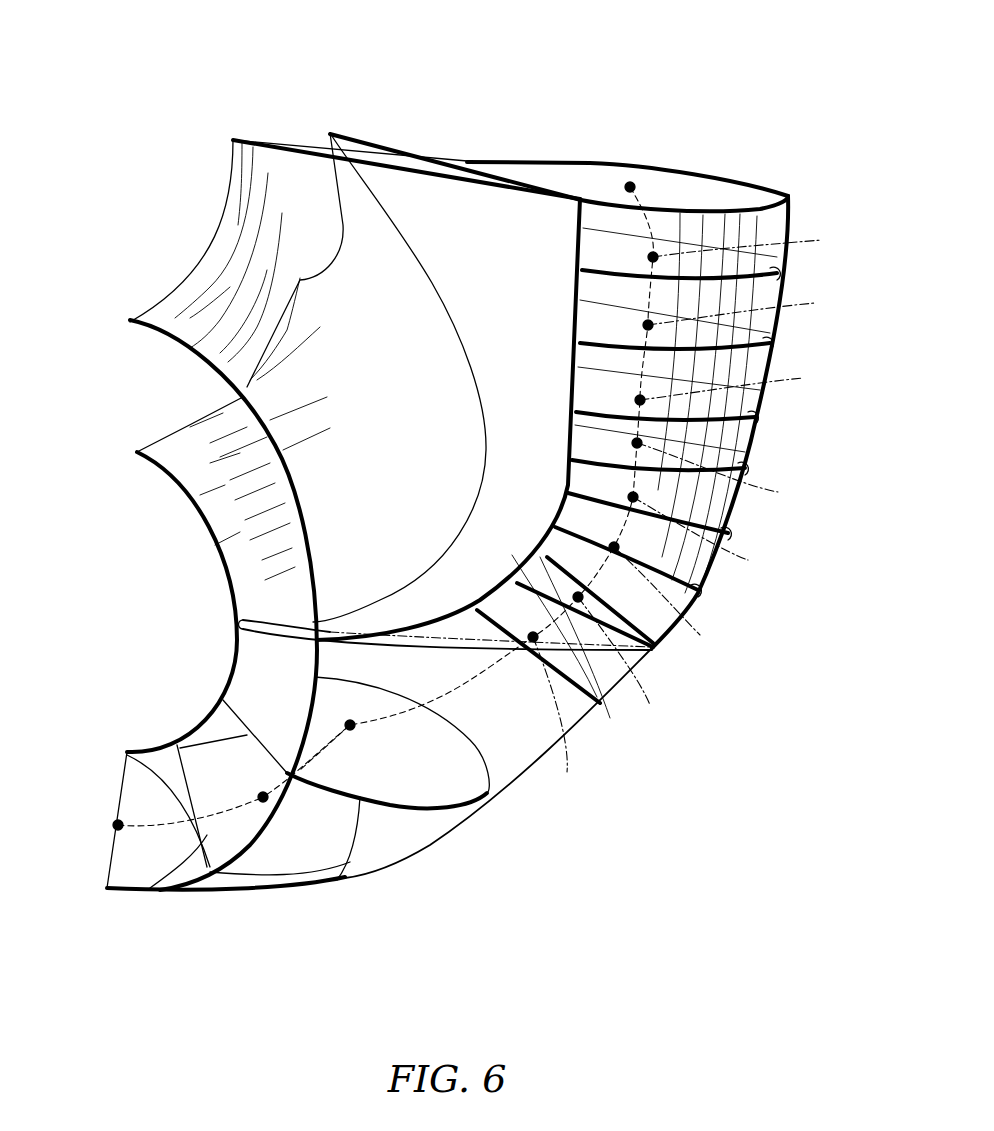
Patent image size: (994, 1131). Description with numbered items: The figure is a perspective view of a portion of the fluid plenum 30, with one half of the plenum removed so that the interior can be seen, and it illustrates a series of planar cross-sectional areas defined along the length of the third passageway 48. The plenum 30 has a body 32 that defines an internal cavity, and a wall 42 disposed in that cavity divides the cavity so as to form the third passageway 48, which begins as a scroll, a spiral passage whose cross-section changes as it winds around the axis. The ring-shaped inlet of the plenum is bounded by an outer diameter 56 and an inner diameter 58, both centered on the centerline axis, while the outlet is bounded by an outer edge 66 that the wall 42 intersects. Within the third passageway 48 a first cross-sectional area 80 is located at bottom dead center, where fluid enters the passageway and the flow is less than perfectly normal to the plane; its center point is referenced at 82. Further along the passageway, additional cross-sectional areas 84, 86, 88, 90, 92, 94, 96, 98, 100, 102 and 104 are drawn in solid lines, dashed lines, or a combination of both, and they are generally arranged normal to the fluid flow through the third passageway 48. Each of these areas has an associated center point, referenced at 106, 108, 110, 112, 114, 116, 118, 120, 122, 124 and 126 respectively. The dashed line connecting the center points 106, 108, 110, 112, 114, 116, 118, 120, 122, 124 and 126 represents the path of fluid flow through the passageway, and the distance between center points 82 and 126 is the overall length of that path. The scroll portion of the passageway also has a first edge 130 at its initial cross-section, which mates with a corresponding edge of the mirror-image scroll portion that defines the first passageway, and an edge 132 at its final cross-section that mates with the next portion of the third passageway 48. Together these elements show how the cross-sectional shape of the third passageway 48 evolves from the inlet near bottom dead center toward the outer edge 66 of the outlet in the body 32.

The fluid plenum 30 is at (180, 85).
The body 32 is at (208, 188).
The wall 42 is at (430, 150).
The third passageway 48 is at (250, 658).
The outer diameter 56 is at (160, 328).
The inner diameter 58 is at (178, 462).
The outer edge 66 is at (745, 182).
The cross-sectional area 80 is at (142, 777).
The center point 82 is at (118, 825).
The cross-sectional area 84 is at (200, 757).
The cross-sectional area 86 is at (257, 702).
The cross-sectional area 88 is at (598, 703).
The cross-sectional area 90 is at (650, 652).
The cross-sectional area 92 is at (700, 593).
The cross-sectional area 94 is at (725, 538).
The cross-sectional area 96 is at (740, 472).
The cross-sectional area 98 is at (750, 425).
The cross-sectional area 100 is at (760, 355).
The cross-sectional area 102 is at (762, 282).
The cross-sectional area 104 is at (698, 190).
The center point 106 is at (263, 797).
The center point 108 is at (350, 725).
The center point 110 is at (558, 719).
The center point 112 is at (623, 668).
The center point 114 is at (668, 605).
The center point 116 is at (706, 536).
The center point 118 is at (728, 475).
The center point 120 is at (742, 384).
The center point 122 is at (748, 309).
The center point 124 is at (757, 242).
The center point 126 is at (630, 187).
The first edge 130 is at (107, 873).
The edge 132 is at (467, 642).